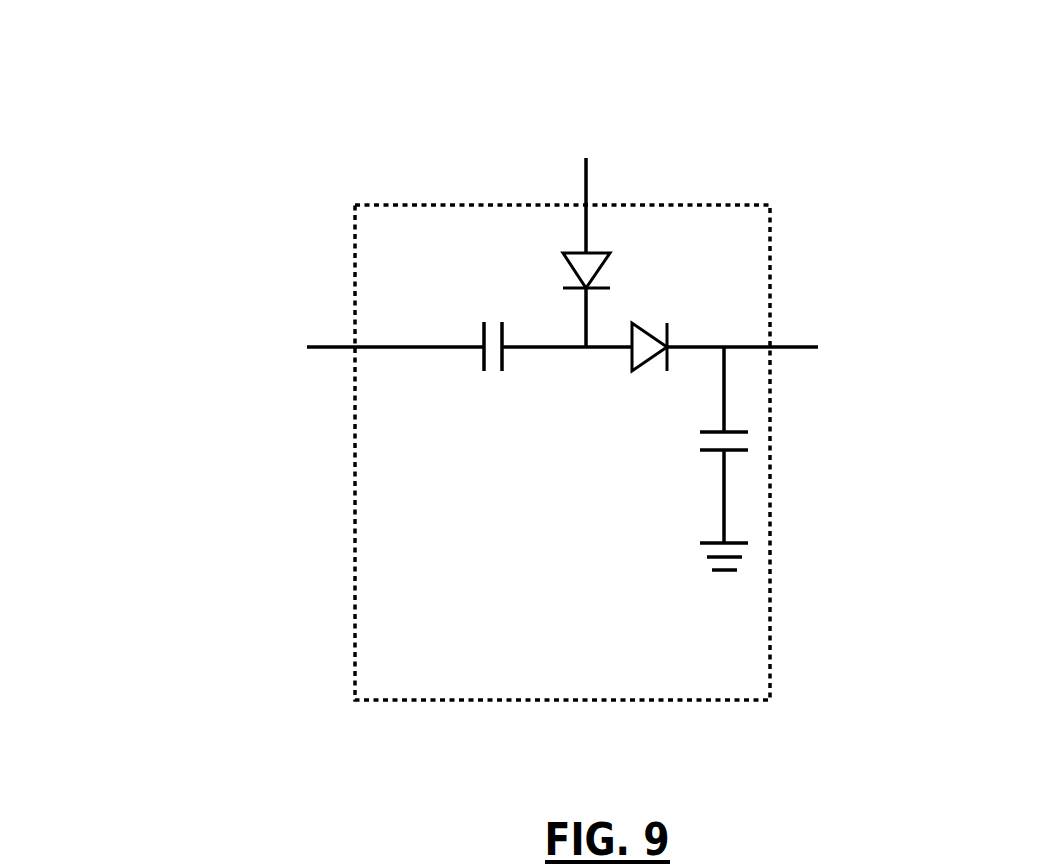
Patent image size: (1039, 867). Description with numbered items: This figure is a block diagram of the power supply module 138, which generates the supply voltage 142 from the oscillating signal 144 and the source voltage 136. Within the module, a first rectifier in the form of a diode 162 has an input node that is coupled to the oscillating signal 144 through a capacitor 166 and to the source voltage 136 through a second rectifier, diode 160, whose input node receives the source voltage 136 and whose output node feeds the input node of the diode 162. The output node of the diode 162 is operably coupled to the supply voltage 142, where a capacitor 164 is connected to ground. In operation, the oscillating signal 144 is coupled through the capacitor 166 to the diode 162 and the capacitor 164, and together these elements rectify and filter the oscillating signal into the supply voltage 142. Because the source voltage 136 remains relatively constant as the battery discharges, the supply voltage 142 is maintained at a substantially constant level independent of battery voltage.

The source voltage 136 is at (586, 143).
The power supply module 138 is at (380, 654).
The supply voltage 142 is at (842, 279).
The oscillating signal 144 is at (315, 344).
The diode 160 is at (620, 278).
The diode 162 is at (641, 406).
The capacitor 164 is at (665, 466).
The capacitor 166 is at (493, 286).